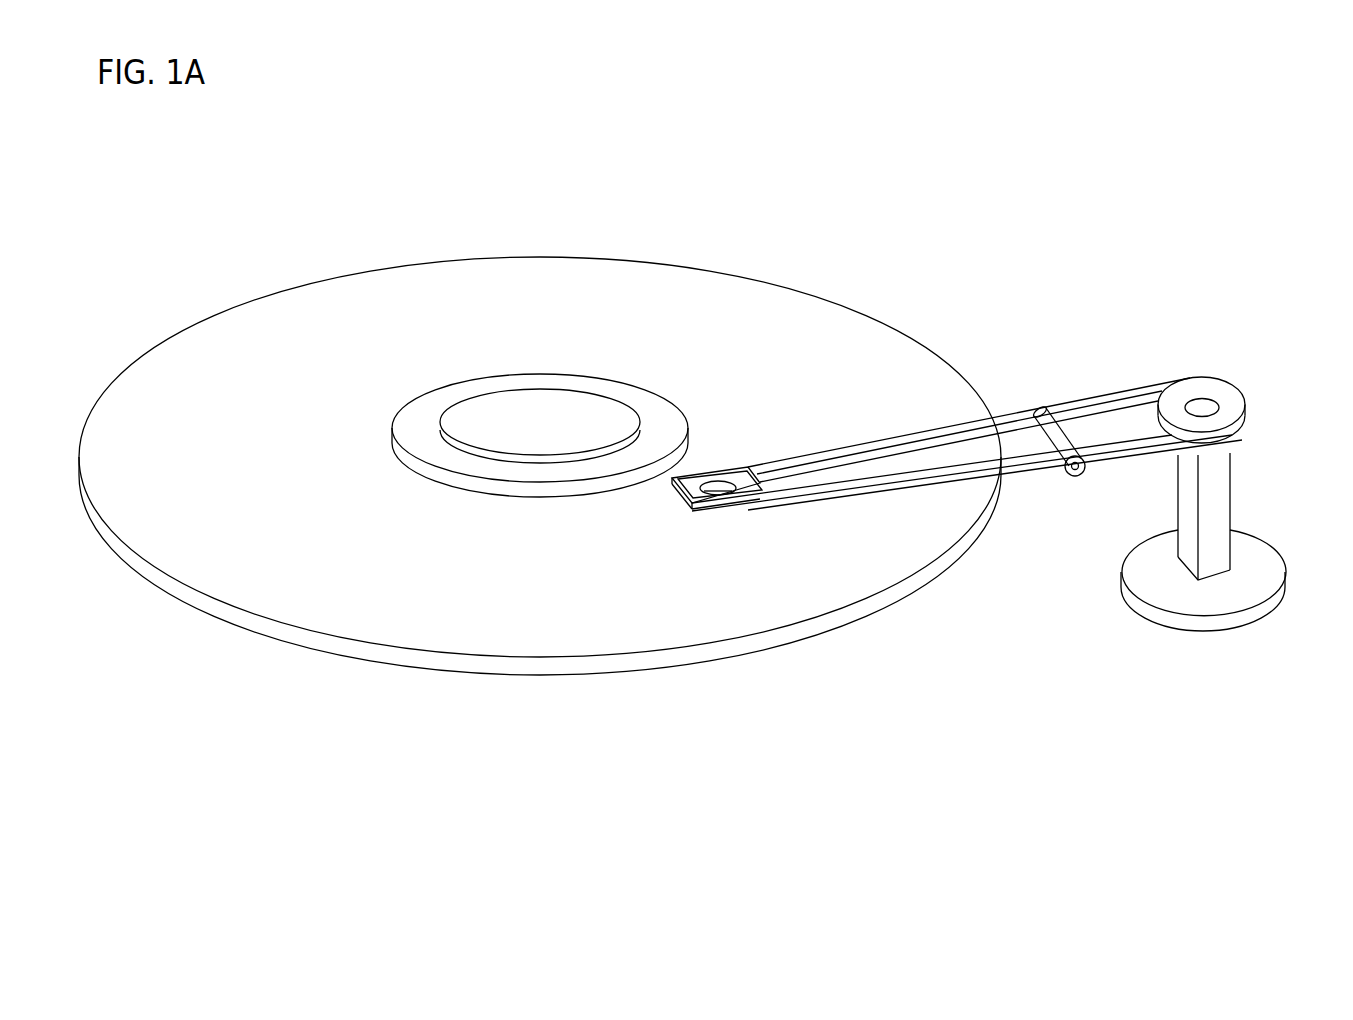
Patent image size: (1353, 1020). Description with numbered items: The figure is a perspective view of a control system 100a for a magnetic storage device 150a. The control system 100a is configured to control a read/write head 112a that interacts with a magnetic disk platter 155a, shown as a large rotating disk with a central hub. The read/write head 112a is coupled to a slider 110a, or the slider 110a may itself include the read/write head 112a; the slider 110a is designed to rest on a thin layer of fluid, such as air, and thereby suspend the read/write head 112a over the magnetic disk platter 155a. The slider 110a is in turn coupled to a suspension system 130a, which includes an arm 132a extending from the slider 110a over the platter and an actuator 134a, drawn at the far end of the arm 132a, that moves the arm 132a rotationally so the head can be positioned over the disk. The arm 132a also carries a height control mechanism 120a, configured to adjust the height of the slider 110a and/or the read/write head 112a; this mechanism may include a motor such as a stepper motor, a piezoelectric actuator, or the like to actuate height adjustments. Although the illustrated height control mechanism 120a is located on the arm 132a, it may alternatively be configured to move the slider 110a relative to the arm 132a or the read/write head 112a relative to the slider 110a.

The control system 100a is at (1205, 668).
The slider 110a is at (737, 500).
The read/write head 112a is at (693, 510).
The height control mechanism 120a is at (1075, 478).
The suspension system 130a is at (1110, 340).
The arm 132a is at (870, 500).
The actuator 134a is at (1203, 407).
The magnetic storage device 150a is at (253, 793).
The magnetic disk platter 155a is at (692, 268).